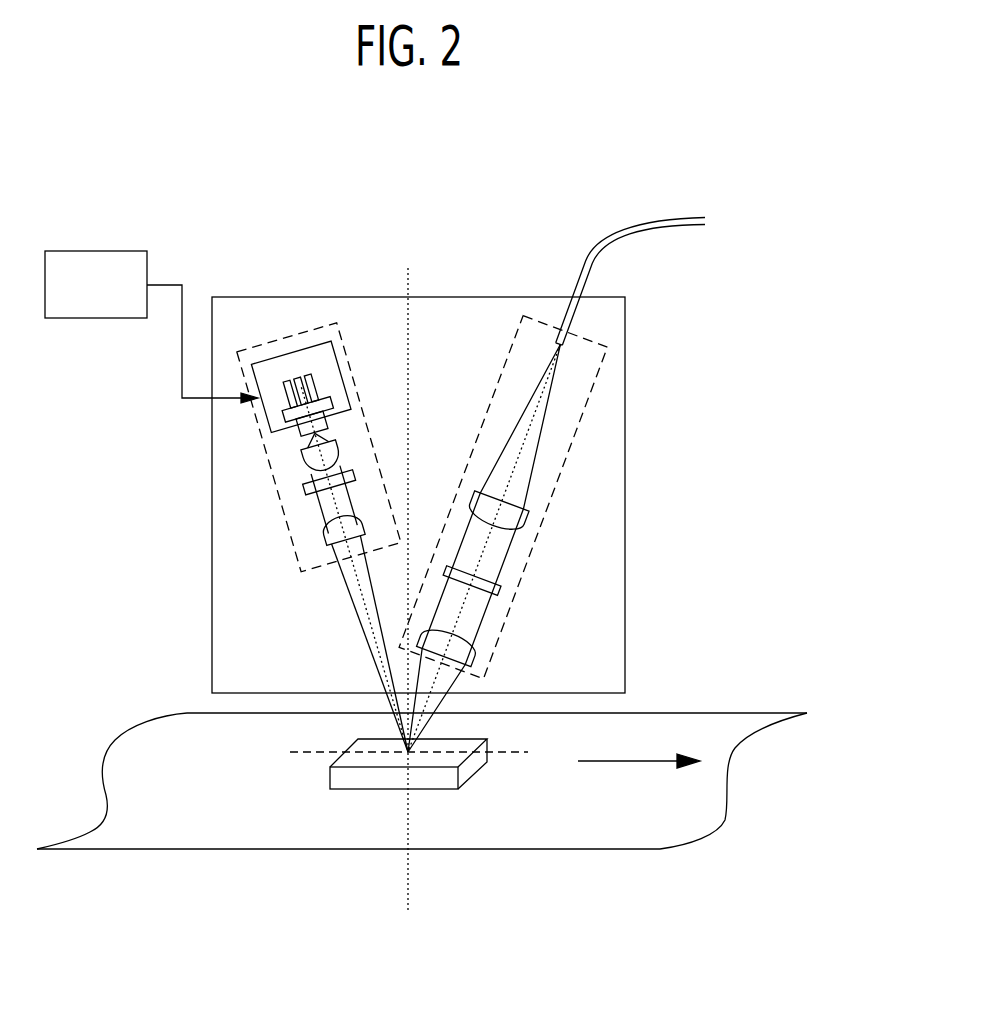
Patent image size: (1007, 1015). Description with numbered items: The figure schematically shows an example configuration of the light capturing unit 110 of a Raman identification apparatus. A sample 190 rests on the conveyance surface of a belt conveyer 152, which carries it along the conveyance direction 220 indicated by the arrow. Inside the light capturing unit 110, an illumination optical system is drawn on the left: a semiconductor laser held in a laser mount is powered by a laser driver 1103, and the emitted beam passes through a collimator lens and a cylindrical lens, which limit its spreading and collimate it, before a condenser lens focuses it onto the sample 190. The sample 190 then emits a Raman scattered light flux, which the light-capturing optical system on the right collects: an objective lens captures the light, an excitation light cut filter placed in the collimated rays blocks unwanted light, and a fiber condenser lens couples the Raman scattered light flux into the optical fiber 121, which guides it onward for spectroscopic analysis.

The light capturing unit 110 is at (237, 297).
The laser driver 1103 is at (97, 318).
The optical fiber 121 is at (611, 242).
The sample 190 is at (355, 792).
The belt conveyer 152 is at (532, 837).
The conveyance direction 220 is at (618, 762).